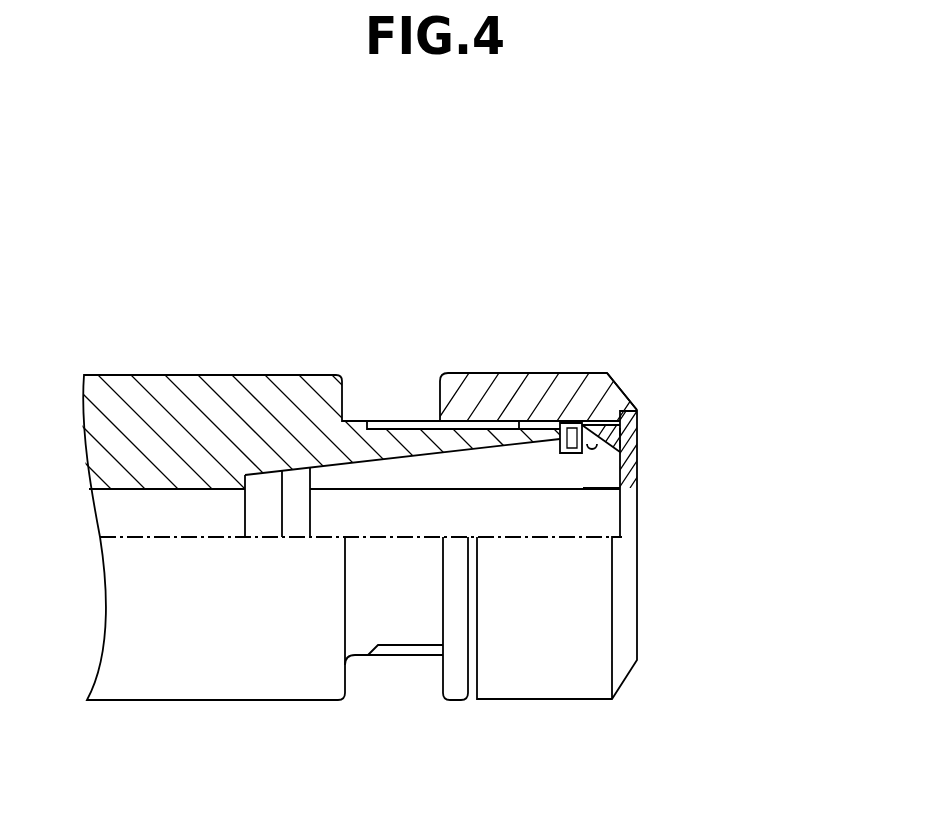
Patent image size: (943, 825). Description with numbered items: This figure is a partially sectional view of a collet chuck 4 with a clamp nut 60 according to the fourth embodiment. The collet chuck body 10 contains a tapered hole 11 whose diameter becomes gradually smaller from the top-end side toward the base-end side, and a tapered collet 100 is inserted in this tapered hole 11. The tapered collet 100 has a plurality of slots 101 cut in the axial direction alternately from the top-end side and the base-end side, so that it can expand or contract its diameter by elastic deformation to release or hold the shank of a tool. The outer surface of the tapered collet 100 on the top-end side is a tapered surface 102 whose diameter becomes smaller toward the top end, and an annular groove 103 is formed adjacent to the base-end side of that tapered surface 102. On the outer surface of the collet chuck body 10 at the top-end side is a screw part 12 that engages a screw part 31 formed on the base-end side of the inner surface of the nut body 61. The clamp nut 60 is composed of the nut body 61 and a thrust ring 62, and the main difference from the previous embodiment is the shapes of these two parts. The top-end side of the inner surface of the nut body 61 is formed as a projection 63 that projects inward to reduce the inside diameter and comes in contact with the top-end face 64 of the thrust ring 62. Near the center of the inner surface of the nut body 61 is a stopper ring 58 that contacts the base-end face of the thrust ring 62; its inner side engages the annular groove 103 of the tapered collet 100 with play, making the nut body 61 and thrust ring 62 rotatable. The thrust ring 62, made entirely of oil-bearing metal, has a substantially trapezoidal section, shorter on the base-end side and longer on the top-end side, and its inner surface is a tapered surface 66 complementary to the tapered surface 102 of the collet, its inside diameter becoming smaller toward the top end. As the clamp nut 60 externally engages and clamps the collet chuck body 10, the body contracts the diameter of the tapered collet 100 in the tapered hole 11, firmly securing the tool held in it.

The collet chuck 4 is at (556, 218).
The collet chuck body 10 is at (189, 393).
The tapered hole 11 is at (343, 458).
The screw part 12 is at (459, 418).
The screw part 31 is at (489, 420).
The stopper ring 58 is at (568, 423).
The clamp nut 60 is at (783, 378).
The nut body 61 is at (607, 414).
The thrust ring 62 is at (600, 465).
The projection 63 is at (622, 432).
The top-end face 64 is at (622, 443).
The tapered surface 66 is at (598, 427).
The tapered collet 100 is at (602, 470).
The slots 101 is at (418, 468).
The tapered surface 102 is at (618, 432).
The annular groove 103 is at (572, 454).